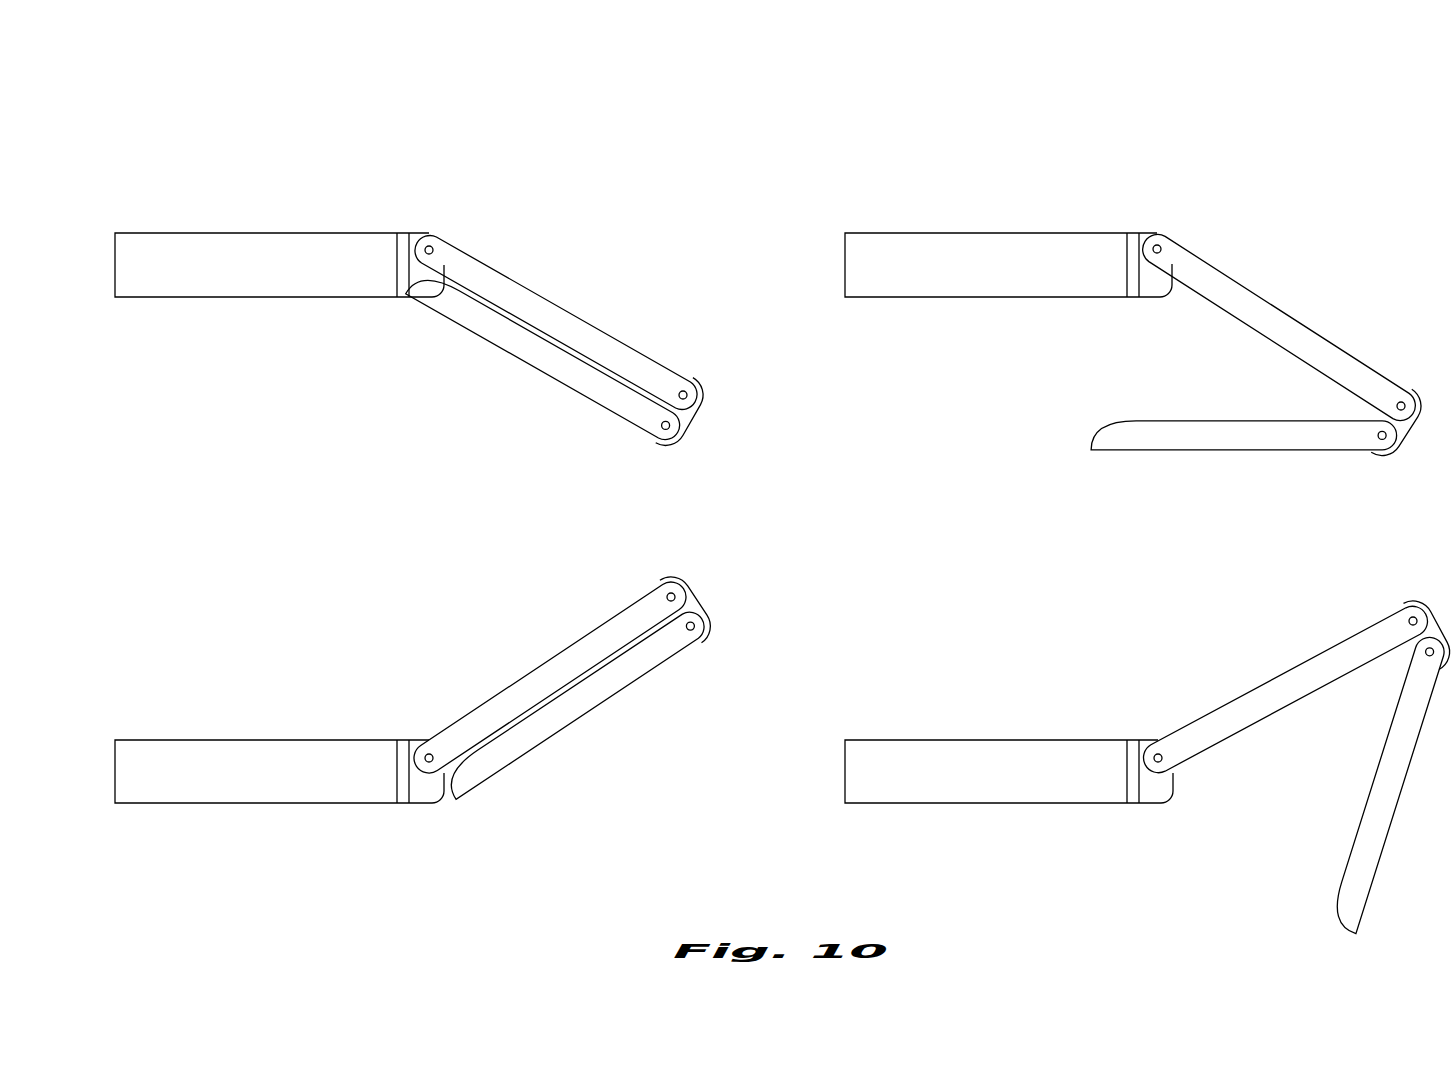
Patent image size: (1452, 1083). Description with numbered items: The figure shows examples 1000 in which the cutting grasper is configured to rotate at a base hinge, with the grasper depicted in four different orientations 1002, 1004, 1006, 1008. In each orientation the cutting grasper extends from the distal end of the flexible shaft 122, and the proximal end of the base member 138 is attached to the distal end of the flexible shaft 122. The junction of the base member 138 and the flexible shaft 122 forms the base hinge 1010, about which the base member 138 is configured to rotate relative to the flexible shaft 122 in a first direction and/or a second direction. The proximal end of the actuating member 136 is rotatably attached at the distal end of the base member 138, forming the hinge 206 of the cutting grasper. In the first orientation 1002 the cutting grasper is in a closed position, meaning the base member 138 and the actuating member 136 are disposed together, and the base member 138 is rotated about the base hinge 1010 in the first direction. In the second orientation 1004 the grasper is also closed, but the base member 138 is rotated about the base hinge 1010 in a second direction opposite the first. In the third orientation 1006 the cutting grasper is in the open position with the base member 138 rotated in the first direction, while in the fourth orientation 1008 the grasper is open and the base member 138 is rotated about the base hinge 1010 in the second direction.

The examples 1000 is at (186, 105).
The first orientation 1002 is at (168, 146).
The second orientation 1004 is at (168, 633).
The third orientation 1006 is at (898, 146).
The fourth orientation 1008 is at (898, 633).
The flexible shaft 122 is at (215, 250).
The actuating member 136 is at (526, 350).
The base member 138 is at (601, 347).
The base hinge 1010 is at (431, 249).
The hinge 206 is at (1383, 440).